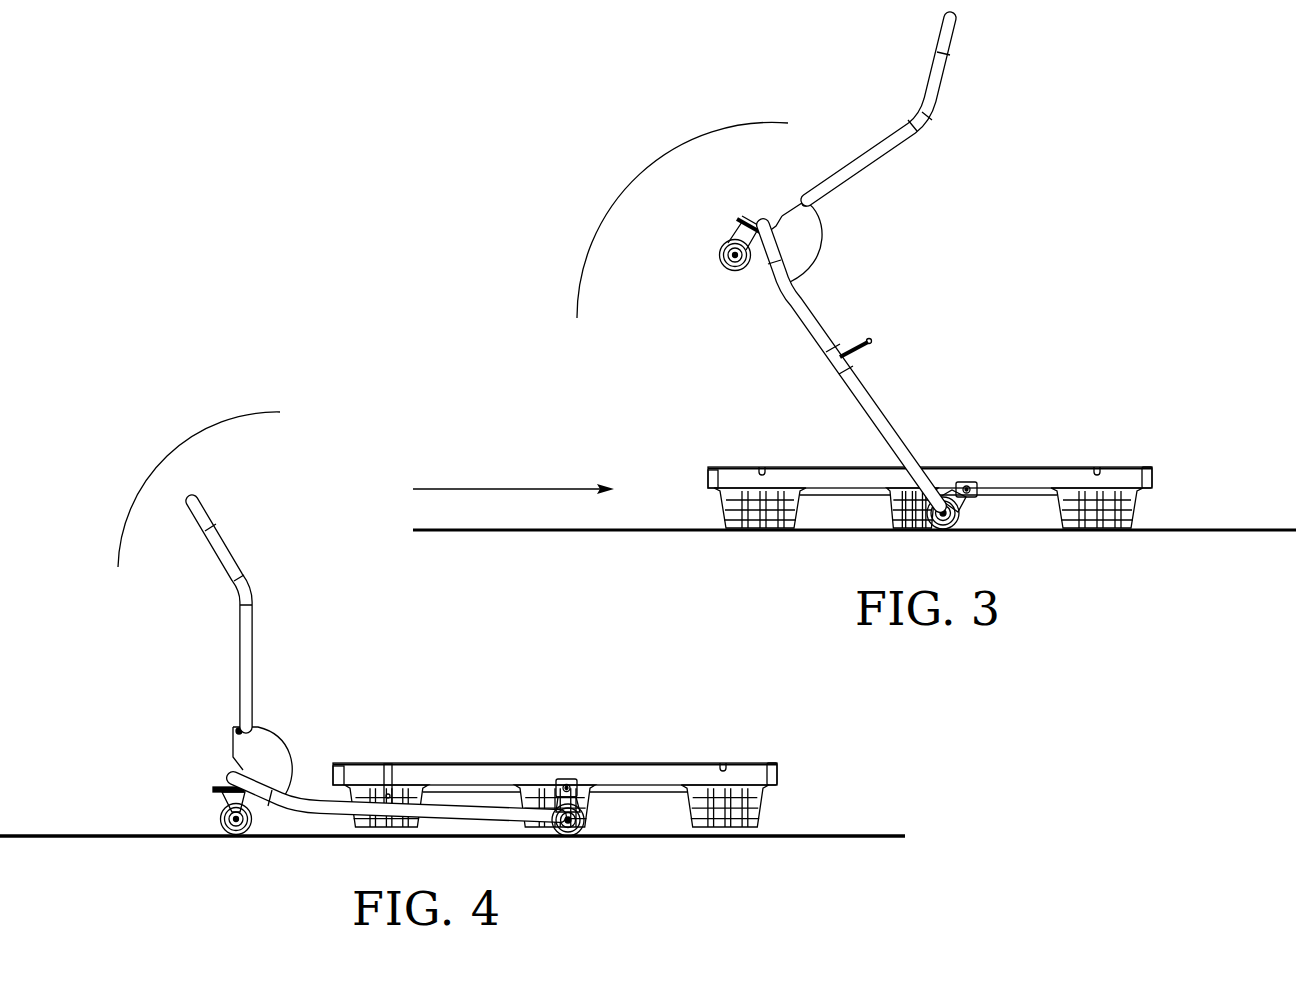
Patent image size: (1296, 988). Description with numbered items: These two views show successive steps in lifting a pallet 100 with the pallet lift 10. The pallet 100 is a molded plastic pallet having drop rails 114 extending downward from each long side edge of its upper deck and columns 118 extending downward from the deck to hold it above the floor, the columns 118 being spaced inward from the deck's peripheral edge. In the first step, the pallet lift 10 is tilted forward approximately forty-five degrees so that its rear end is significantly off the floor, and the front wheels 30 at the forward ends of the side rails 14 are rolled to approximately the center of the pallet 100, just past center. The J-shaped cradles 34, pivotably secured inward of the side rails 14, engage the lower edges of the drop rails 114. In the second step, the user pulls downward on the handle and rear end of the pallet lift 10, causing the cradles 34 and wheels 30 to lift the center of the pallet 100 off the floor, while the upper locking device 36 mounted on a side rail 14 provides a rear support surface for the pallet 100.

In FIG. 3, the pallet lift 10 is at (868, 138).
In FIG. 4, the pallet lift 10 is at (271, 613).
In FIG. 3, the side rails 14 is at (815, 318).
In FIG. 4, the side rails 14 is at (322, 796).
In FIG. 3, the wheels 30 is at (919, 531).
In FIG. 4, the wheels 30 is at (582, 832).
In FIG. 3, the J-shaped cradle 34 is at (957, 483).
In FIG. 4, the J-shaped cradle 34 is at (572, 781).
In FIG. 4, the upper locking device 36 is at (394, 777).
In FIG. 3, the pallet 100 is at (930, 449).
In FIG. 4, the pallet 100 is at (601, 766).
In FIG. 3, the drop rails 114 is at (1024, 477).
In FIG. 4, the columns 118 is at (764, 808).